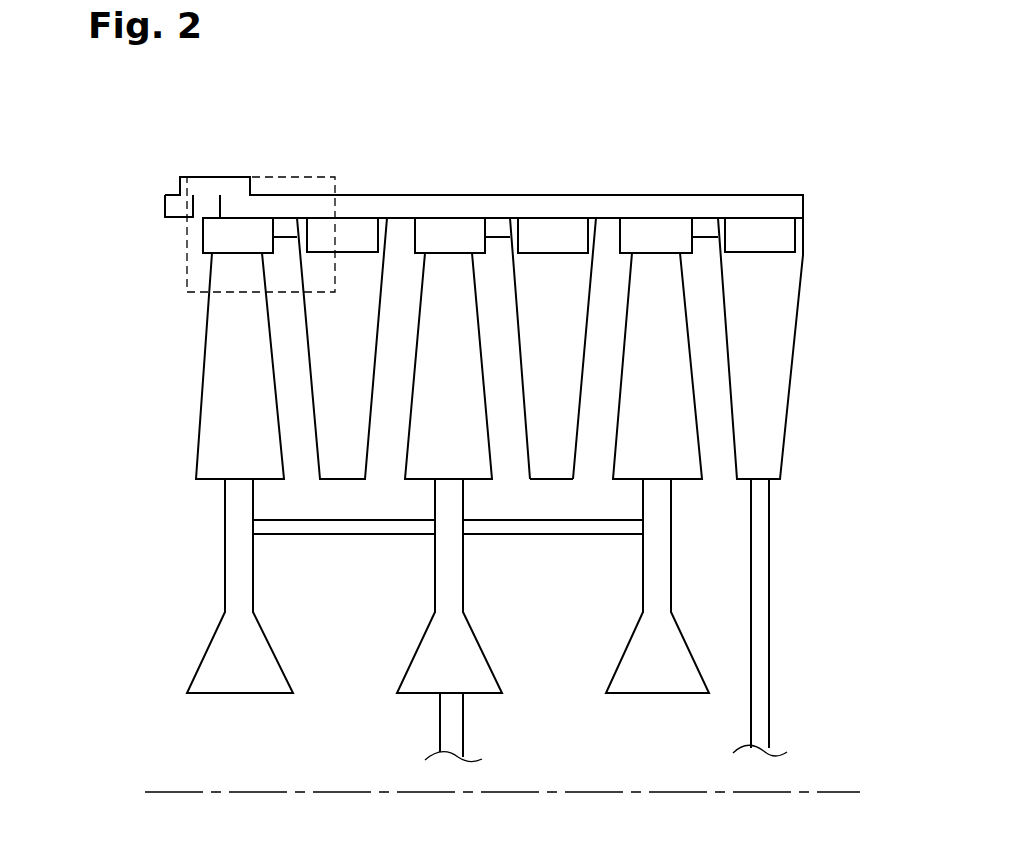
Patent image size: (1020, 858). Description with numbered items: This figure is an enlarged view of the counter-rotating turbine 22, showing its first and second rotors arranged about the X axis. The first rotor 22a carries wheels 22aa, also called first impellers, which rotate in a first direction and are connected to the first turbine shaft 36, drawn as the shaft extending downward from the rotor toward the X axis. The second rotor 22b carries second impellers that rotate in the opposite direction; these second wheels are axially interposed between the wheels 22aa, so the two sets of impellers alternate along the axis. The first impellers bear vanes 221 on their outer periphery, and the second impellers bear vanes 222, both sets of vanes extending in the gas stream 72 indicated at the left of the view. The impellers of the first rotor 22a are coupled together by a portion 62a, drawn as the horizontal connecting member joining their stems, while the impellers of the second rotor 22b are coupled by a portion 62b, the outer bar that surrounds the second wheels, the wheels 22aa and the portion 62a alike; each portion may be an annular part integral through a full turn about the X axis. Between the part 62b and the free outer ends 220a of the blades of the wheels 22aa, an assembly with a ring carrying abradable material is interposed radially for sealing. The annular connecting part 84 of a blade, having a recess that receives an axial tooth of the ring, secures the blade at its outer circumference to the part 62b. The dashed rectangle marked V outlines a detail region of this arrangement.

The counter-rotating turbine 22 is at (822, 262).
The first rotor 22a is at (224, 571).
The wheels of the first rotor 22aa is at (650, 330).
The second rotor 22b is at (773, 625).
The free outer ends of the blades 220a is at (242, 265).
The vanes of the first impellers 221 is at (212, 459).
The vanes of the second impellers 222 is at (543, 440).
The first turbine shaft 36 is at (455, 737).
The portion of the first rotor 62a is at (310, 527).
The portion of the second rotor 62b is at (310, 210).
The annular connecting part 84 is at (370, 232).
The gas stream 72 is at (47, 348).
The detail view region V is at (182, 207).
The X axis X is at (156, 792).